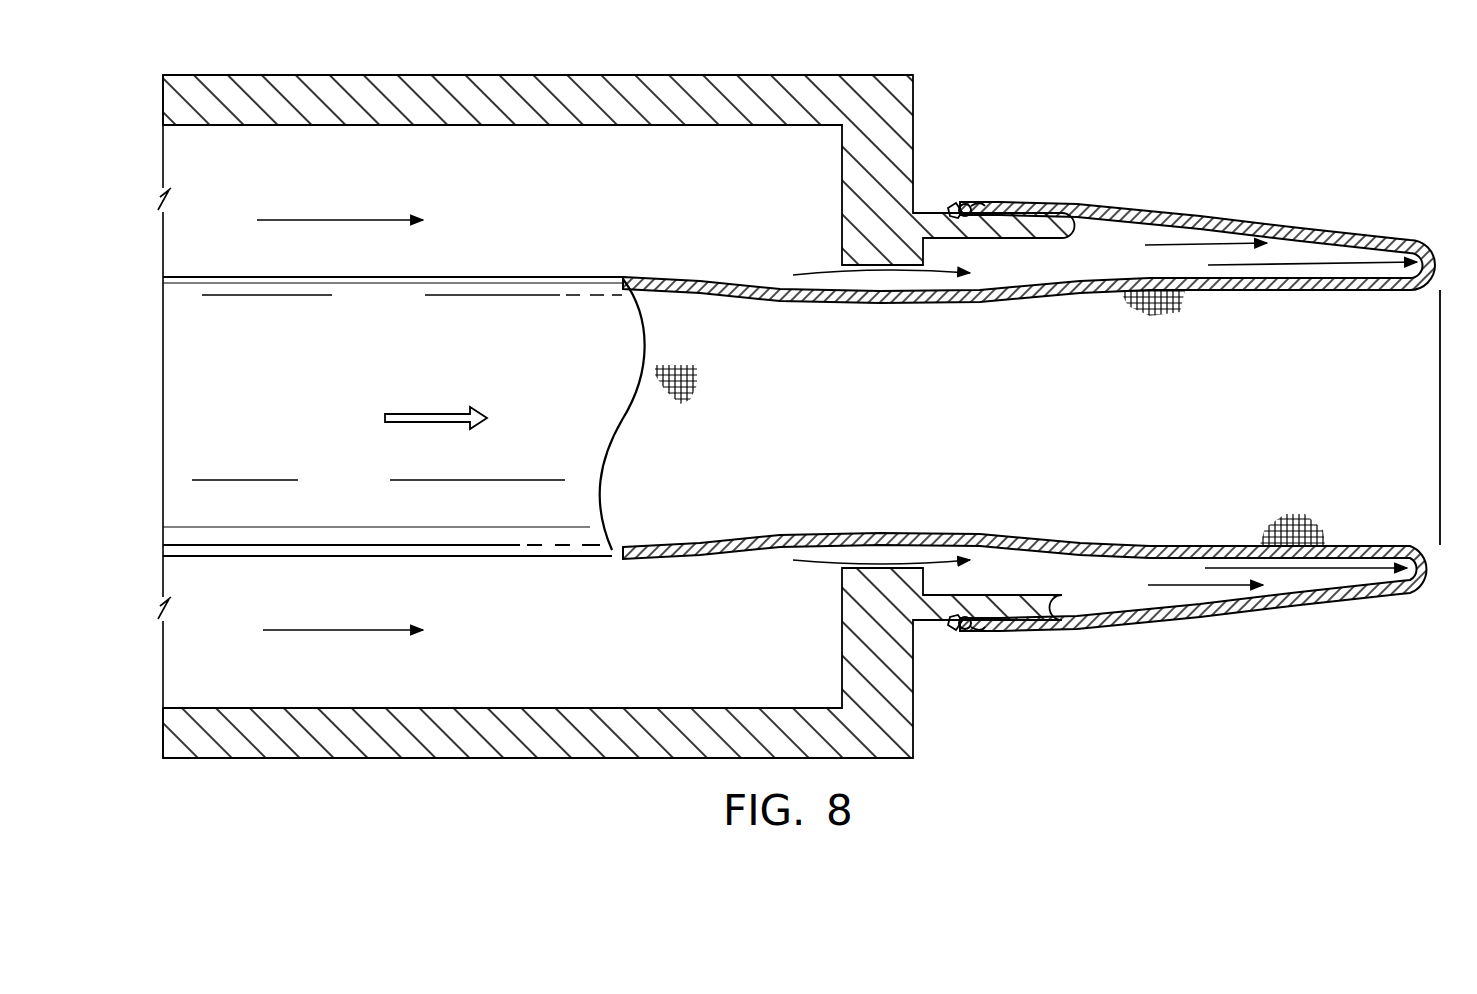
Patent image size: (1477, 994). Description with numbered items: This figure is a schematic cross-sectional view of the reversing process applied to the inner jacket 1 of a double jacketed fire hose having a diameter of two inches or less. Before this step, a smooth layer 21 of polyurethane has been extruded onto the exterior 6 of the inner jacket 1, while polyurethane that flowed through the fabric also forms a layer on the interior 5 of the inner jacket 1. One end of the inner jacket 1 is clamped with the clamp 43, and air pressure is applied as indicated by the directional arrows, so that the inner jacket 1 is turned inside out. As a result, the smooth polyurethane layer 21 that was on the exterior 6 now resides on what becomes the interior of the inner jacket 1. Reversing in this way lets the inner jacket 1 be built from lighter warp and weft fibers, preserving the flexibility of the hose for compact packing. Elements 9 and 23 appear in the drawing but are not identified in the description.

The inner jacket 1 is at (1254, 297).
The interior of the inner jacket 5 is at (1400, 367).
The exterior of the inner jacket 6 is at (1288, 282).
The flow passage 9 is at (1210, 227).
The layer of polyurethane 21 is at (1155, 280).
The nozzle housing 23 is at (934, 76).
The clamp 43 is at (968, 205).